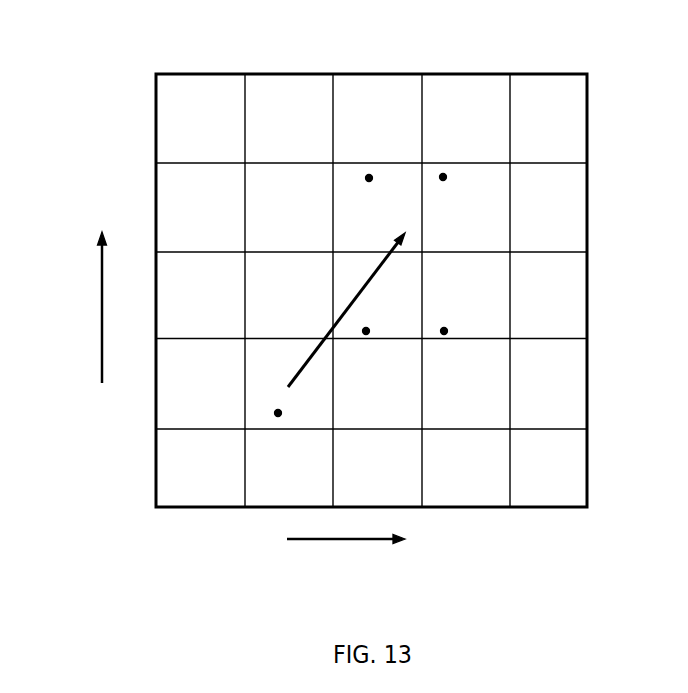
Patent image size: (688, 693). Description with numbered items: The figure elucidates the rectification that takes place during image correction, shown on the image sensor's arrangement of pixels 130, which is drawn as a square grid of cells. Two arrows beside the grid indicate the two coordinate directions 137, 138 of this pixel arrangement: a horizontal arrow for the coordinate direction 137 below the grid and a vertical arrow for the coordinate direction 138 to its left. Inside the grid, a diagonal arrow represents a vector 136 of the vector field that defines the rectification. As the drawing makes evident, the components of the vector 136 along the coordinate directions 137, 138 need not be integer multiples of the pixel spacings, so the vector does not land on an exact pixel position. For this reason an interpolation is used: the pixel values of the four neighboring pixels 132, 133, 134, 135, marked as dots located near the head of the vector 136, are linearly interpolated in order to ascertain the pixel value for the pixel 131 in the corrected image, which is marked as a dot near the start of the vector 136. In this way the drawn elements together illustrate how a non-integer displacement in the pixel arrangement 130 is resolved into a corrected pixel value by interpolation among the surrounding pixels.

The arrangement of pixels 130 is at (148, 91).
The pixel 131 is at (278, 413).
The pixel 132 is at (369, 178).
The pixel 133 is at (443, 177).
The pixel 134 is at (366, 331).
The pixel 135 is at (444, 331).
The vector 136 is at (323, 335).
The coordinate direction 137 is at (334, 541).
The coordinate direction 138 is at (102, 301).